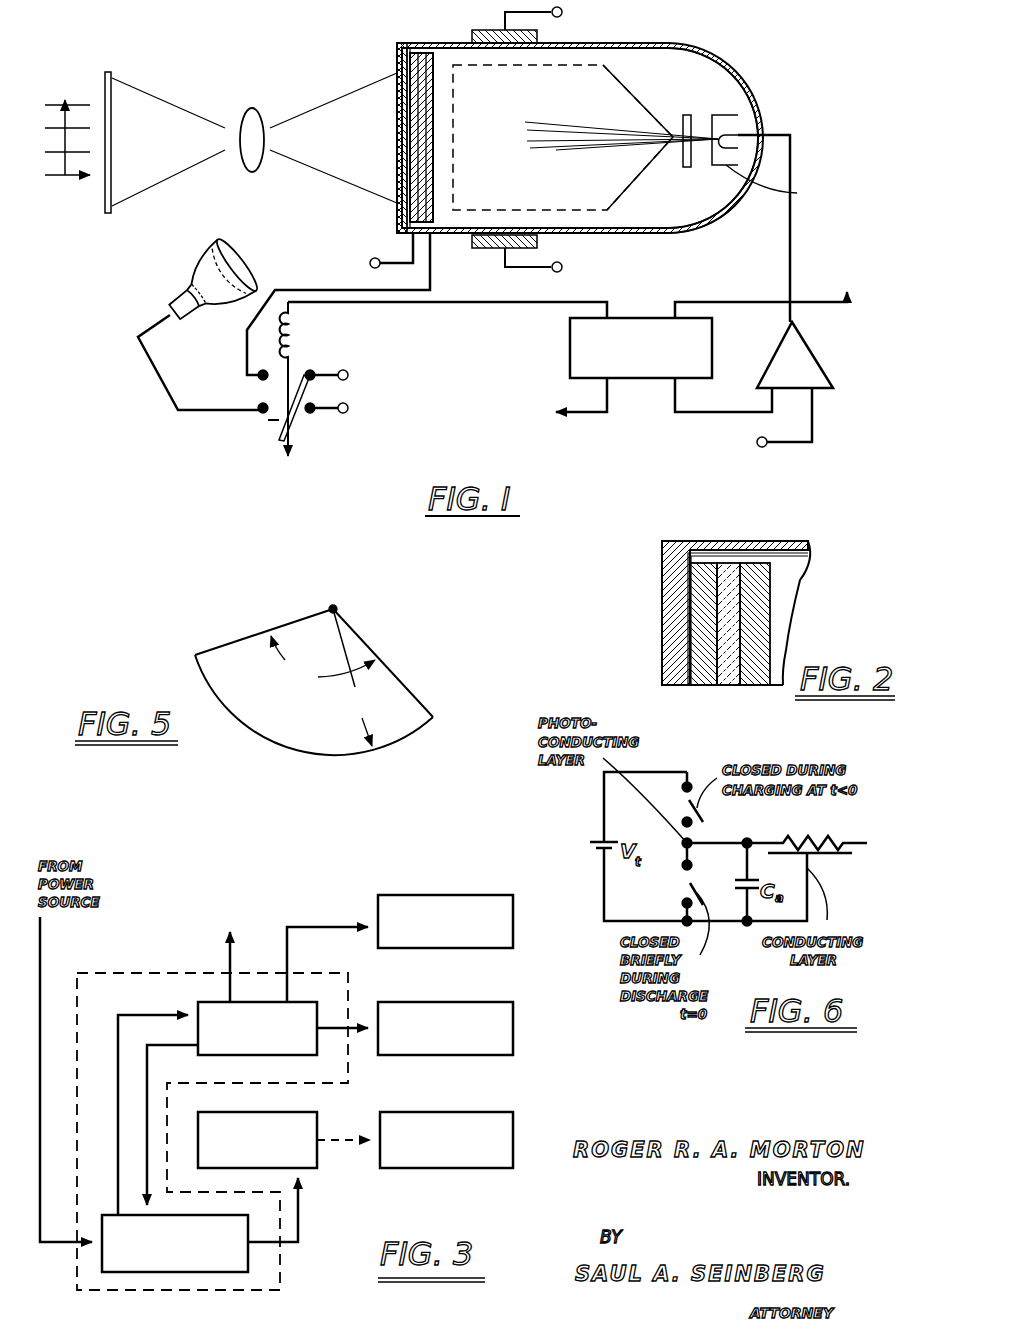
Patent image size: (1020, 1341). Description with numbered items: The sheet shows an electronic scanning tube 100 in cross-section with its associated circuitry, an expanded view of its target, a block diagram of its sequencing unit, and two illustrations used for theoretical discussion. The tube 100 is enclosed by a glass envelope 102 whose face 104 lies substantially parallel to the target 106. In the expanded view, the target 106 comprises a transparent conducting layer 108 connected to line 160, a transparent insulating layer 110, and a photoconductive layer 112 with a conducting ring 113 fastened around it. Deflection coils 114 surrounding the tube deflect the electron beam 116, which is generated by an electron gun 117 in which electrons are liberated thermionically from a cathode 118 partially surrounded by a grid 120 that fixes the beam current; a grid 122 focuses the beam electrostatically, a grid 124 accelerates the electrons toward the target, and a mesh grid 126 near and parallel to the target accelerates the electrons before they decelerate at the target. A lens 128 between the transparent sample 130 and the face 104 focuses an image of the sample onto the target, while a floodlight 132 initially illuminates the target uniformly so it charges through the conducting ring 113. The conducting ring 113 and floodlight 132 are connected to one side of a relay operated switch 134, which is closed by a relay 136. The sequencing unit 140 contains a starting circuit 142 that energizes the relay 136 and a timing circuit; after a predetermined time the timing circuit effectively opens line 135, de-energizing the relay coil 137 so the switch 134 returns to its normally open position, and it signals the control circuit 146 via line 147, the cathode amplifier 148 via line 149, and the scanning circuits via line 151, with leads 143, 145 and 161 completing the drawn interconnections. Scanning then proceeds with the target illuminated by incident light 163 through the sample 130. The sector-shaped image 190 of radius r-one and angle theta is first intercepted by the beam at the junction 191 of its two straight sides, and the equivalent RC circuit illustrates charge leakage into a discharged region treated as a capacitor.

In FIG. 1, the scanning tube 100 is at (718, 78).
In FIG. 1, the glass envelope 102 is at (760, 100).
In FIG. 2, the glass envelope 102 is at (770, 541).
In FIG. 1, the face 104 is at (397, 175).
In FIG. 2, the face 104 is at (677, 620).
In FIG. 1, the target 106 is at (444, 115).
In FIG. 2, the target 106 is at (712, 555).
In FIG. 2, the transparent conducting layer 108 is at (700, 580).
In FIG. 2, the transparent insulating layer 110 is at (730, 650).
In FIG. 2, the photoconductive layer 112 is at (770, 640).
In FIG. 1, the conducting ring 113 is at (432, 52).
In FIG. 2, the conducting ring 113 is at (773, 585).
In FIG. 1, the deflection coils 114 is at (492, 30).
In FIG. 1, the electron beam 116 is at (543, 122).
In FIG. 1, the electron gun 117 is at (718, 200).
In FIG. 1, the cathode 118 is at (738, 120).
In FIG. 1, the grid 120 is at (784, 184).
In FIG. 1, the grid 122 is at (634, 97).
In FIG. 1, the grid 124 is at (688, 167).
In FIG. 1, the grid 126 is at (455, 143).
In FIG. 1, the lens 128 is at (251, 108).
In FIG. 1, the transparent sample 130 is at (111, 113).
In FIG. 1, the floodlight 132 is at (198, 270).
In FIG. 1, the relay operated switch 134 is at (300, 420).
In FIG. 3, the relay operated switch 134 is at (485, 1170).
In FIG. 1, the line 135 is at (417, 302).
In FIG. 3, the line 135 is at (295, 1245).
In FIG. 3, the relay 136 is at (312, 1170).
In FIG. 1, the relay coil 137 is at (296, 338).
In FIG. 1, the sequencing unit 140 is at (570, 345).
In FIG. 3, the sequencing unit 140 is at (130, 972).
In FIG. 3, the starting circuit 142 is at (208, 1272).
In FIG. 3, the starting circuit output lead 143 is at (135, 1012).
In FIG. 3, the timing circuit feedback lead 145 is at (150, 1100).
In FIG. 3, the control circuit 146 is at (468, 950).
In FIG. 1, the line 147 is at (560, 410).
In FIG. 3, the line 147 is at (338, 925).
In FIG. 1, the cathode amplifier 148 is at (822, 372).
In FIG. 3, the cathode amplifier 148 is at (500, 1058).
In FIG. 1, the line 149 is at (715, 412).
In FIG. 3, the line 149 is at (360, 1035).
In FIG. 1, the line 151 is at (842, 305).
In FIG. 3, the line 151 is at (228, 958).
In FIG. 1, the line 160 is at (371, 266).
In FIG. 1, the control input lead 161 is at (812, 418).
In FIG. 1, the incident light 163 is at (66, 120).
In FIG. 5, the image 190 is at (296, 748).
In FIG. 5, the junction 191 is at (333, 609).